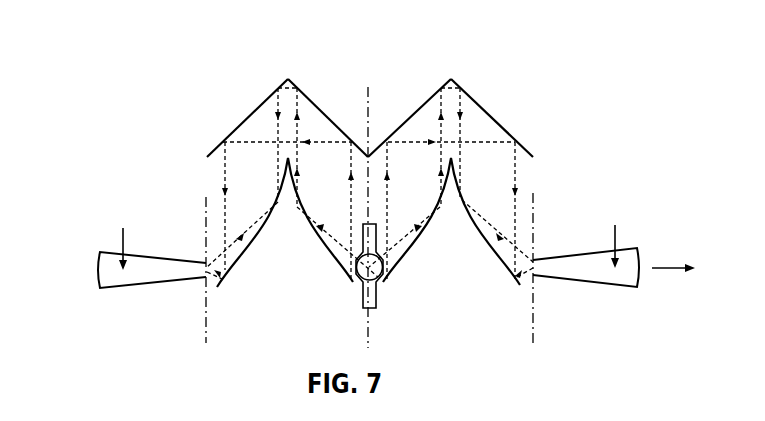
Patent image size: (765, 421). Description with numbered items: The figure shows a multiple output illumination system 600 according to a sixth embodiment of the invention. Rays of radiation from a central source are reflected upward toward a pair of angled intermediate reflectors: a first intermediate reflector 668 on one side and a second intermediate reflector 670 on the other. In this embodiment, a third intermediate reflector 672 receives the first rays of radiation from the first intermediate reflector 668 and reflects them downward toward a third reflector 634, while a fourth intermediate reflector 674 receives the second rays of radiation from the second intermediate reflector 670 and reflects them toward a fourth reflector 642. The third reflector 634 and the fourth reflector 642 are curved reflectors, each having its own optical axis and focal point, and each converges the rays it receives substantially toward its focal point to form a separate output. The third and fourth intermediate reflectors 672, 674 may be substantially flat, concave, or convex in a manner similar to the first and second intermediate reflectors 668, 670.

The multiple output illumination system 600 is at (124, 46).
The first intermediate reflector 668 is at (315, 100).
The second intermediate reflector 670 is at (423, 102).
The third intermediate reflector 672 is at (258, 107).
The fourth intermediate reflector 674 is at (480, 103).
The third reflector 634 is at (243, 266).
The fourth reflector 642 is at (493, 265).